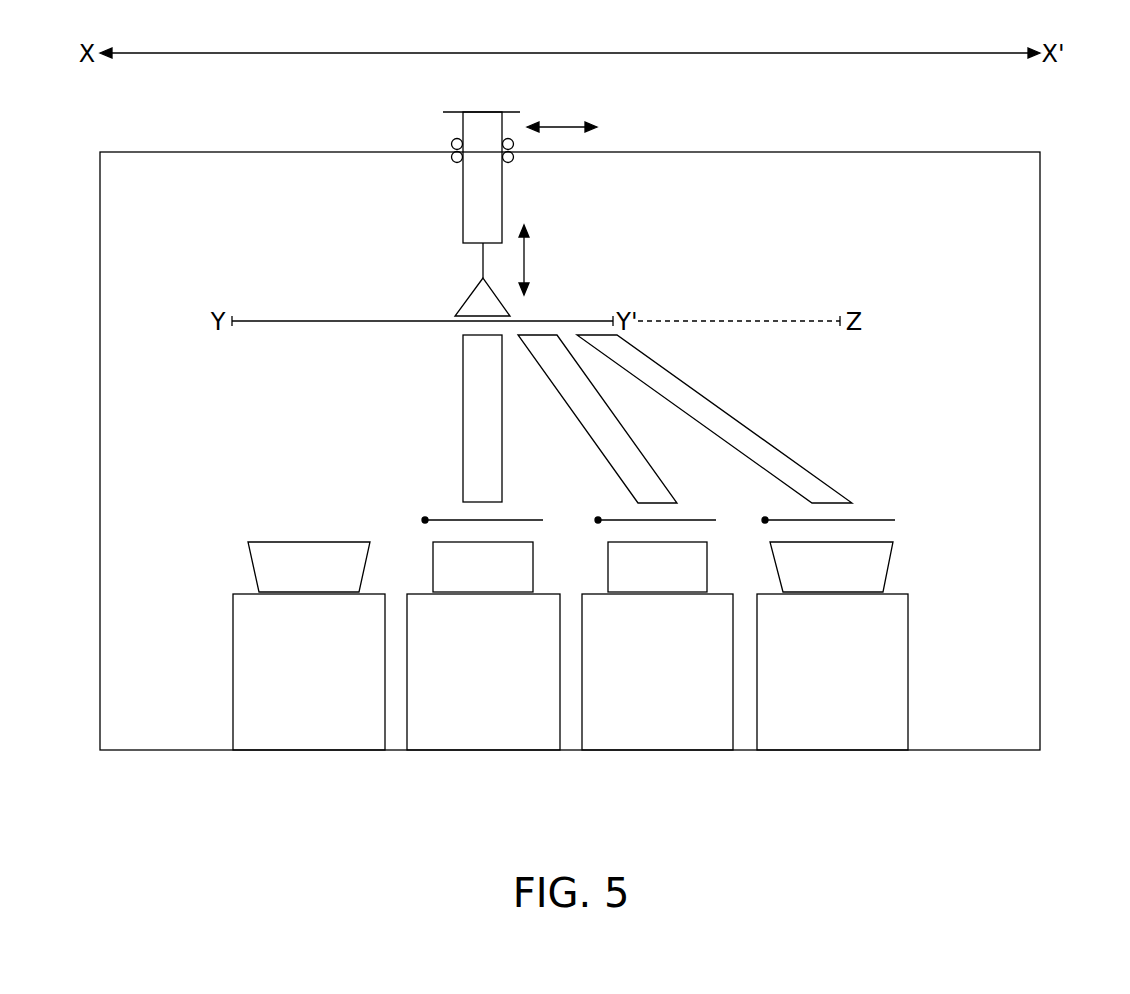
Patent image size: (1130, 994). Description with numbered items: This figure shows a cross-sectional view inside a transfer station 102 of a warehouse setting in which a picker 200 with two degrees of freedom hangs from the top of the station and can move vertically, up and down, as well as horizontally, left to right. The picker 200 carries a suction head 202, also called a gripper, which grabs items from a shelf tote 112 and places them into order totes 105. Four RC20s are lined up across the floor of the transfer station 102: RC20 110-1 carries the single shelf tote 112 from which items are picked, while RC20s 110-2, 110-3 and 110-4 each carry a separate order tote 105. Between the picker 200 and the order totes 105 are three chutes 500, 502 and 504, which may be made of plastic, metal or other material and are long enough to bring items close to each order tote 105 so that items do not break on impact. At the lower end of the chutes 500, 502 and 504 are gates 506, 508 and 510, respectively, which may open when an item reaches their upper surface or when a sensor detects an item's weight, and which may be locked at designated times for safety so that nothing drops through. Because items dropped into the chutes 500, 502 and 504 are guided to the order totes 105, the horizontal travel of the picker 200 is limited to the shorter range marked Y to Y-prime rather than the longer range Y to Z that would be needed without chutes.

The transfer station 102 is at (1041, 220).
The picker 200 is at (463, 188).
The suction head 202 is at (457, 313).
The chute 500 is at (463, 357).
The chute 502 is at (543, 370).
The chute 504 is at (717, 405).
The gate 506 is at (425, 518).
The gate 508 is at (597, 518).
The gate 510 is at (764, 518).
The shelf tote 112 is at (248, 552).
The order tote 105 is at (890, 565).
The RC20 110-1 is at (307, 750).
The RC20 110-2 is at (483, 750).
The RC20 110-3 is at (655, 750).
The RC20 110-4 is at (832, 750).